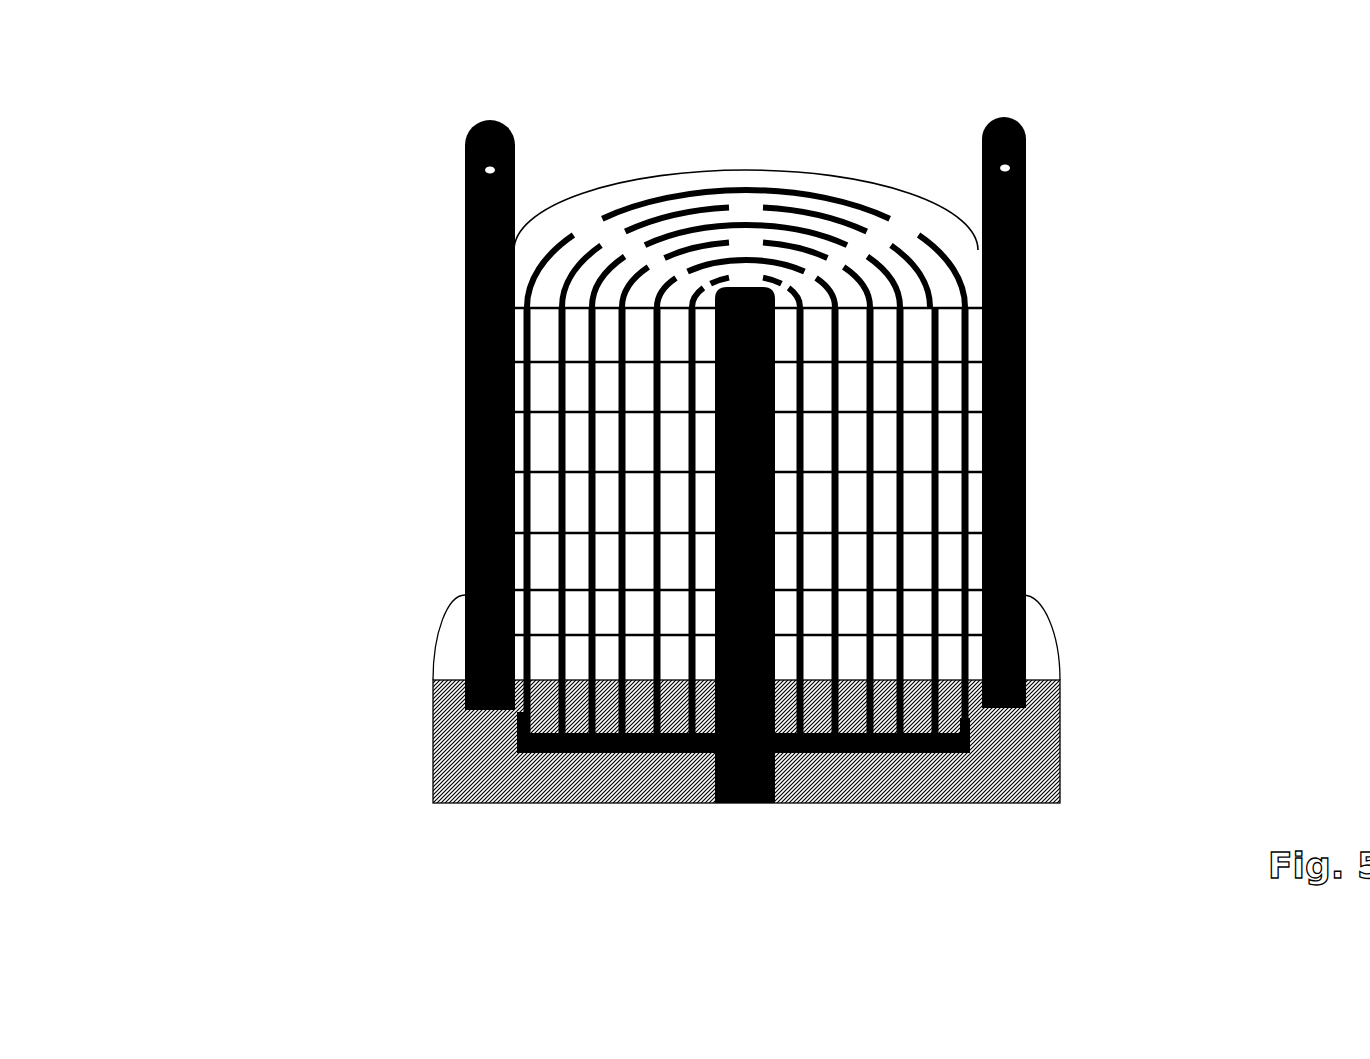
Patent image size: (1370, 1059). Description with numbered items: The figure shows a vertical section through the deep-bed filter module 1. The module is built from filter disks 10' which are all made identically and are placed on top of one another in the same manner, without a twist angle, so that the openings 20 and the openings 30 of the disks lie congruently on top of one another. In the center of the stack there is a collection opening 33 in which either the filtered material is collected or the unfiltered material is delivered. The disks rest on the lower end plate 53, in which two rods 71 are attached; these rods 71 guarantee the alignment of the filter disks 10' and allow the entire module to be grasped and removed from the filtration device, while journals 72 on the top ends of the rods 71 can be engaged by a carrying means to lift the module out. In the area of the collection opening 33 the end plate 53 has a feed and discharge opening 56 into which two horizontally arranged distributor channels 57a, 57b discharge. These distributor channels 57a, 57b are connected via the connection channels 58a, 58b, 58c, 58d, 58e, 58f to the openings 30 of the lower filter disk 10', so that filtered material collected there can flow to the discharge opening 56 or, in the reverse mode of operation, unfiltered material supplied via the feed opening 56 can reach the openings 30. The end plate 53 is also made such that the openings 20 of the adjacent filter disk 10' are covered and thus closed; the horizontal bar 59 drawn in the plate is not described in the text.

The deep-bed filter module 1 is at (1113, 268).
The filter disk 10' is at (593, 471).
The openings 20 is at (812, 207).
The openings 30 is at (962, 559).
The collection opening 33 is at (777, 323).
The end plate 53 is at (1035, 730).
The feed and discharge opening 56 is at (750, 800).
The distributor channel 57a is at (543, 753).
The distributor channel 57b is at (947, 753).
The connection channel 58a is at (520, 723).
The connection channel 58b is at (575, 753).
The connection channel 58c is at (660, 753).
The connection channel 58d is at (838, 753).
The connection channel 58e is at (913, 753).
The connection channel 58f is at (970, 720).
The bus bar 59 is at (520, 741).
The rod 71 is at (1245, 646).
The journal 72 is at (1025, 160).